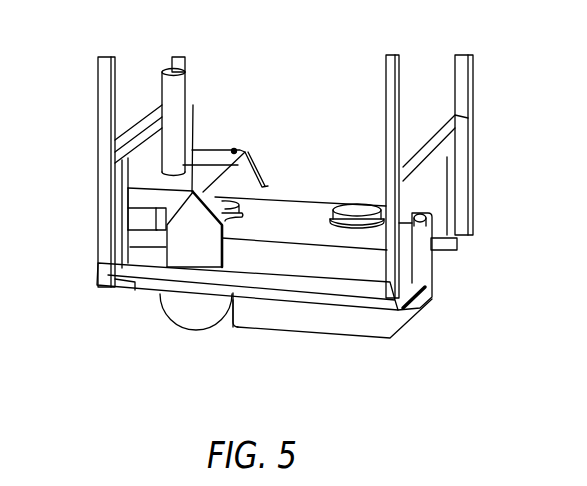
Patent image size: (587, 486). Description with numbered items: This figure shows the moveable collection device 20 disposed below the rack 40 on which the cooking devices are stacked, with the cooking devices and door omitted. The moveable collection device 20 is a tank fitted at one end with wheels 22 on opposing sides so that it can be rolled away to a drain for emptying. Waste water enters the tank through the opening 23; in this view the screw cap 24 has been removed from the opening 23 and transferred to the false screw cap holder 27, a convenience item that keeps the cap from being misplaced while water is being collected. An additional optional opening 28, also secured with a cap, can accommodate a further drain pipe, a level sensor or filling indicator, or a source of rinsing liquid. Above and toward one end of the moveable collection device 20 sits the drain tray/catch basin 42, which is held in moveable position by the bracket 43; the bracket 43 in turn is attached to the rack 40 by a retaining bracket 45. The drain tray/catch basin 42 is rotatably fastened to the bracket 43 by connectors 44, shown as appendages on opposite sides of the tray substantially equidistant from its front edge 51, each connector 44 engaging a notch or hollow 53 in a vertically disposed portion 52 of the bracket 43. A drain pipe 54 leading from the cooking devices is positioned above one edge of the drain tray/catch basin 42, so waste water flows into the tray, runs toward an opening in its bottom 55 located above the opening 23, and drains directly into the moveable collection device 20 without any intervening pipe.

The moveable collection device 20 is at (423, 265).
The wheels 22 is at (197, 330).
The opening 23 is at (237, 212).
The screw cap 24 is at (357, 202).
The false screw cap holder 27 is at (403, 300).
The additional optional opening 28 is at (463, 246).
The rack 40 is at (470, 87).
The drain tray/catch basin 42 is at (145, 197).
The bracket 43 is at (147, 248).
The connectors 44 is at (240, 150).
The retaining bracket 45 is at (165, 277).
The front edge 51 is at (253, 167).
The vertically disposed portion 52 is at (198, 250).
The notch or hollow 53 is at (238, 148).
The drain pipe 54 is at (168, 93).
The bottom 55 is at (150, 140).